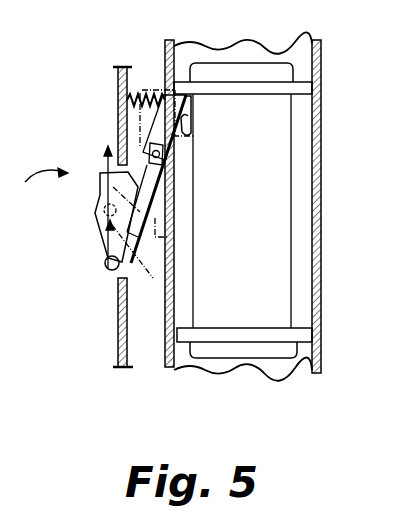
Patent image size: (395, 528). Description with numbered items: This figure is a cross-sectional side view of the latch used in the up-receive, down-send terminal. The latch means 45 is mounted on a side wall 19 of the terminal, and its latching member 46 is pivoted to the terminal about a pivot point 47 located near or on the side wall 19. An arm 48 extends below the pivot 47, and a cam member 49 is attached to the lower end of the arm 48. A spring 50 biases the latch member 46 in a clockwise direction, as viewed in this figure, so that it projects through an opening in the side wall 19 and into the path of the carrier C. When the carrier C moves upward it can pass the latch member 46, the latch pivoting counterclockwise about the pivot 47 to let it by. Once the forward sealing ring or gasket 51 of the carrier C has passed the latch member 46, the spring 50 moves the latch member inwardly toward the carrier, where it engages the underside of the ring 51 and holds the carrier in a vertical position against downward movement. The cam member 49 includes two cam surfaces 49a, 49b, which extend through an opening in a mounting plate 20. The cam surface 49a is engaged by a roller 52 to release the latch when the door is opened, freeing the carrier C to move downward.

The housing G is at (293, 172).
The side wall 19 is at (168, 370).
The mounting plate 20 is at (112, 378).
The latch means 45 is at (41, 190).
The latching member 46 is at (193, 136).
The pivot point 47 is at (165, 165).
The arm 48 is at (152, 212).
The cam member 49 is at (97, 214).
The cam surface 49a is at (106, 268).
The cam surface 49b is at (100, 172).
The spring 50 is at (140, 93).
The sealing ring 51 is at (247, 88).
The roller 52 is at (113, 272).